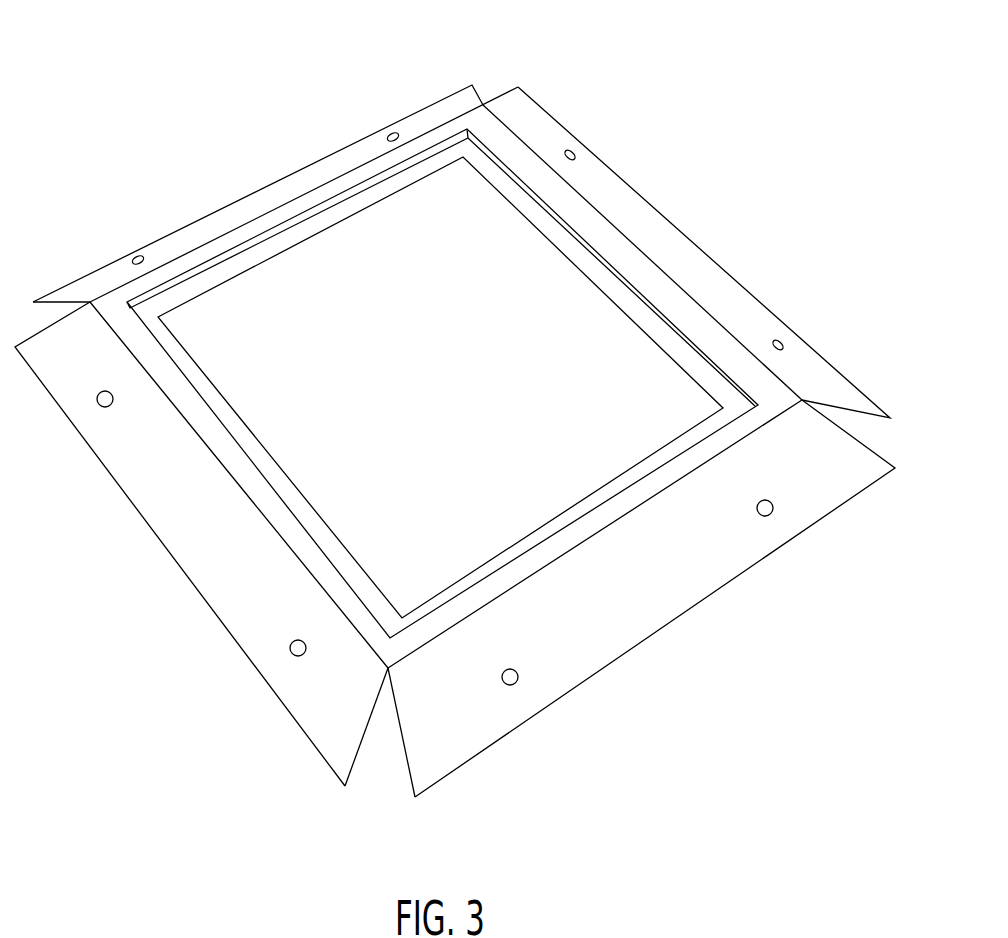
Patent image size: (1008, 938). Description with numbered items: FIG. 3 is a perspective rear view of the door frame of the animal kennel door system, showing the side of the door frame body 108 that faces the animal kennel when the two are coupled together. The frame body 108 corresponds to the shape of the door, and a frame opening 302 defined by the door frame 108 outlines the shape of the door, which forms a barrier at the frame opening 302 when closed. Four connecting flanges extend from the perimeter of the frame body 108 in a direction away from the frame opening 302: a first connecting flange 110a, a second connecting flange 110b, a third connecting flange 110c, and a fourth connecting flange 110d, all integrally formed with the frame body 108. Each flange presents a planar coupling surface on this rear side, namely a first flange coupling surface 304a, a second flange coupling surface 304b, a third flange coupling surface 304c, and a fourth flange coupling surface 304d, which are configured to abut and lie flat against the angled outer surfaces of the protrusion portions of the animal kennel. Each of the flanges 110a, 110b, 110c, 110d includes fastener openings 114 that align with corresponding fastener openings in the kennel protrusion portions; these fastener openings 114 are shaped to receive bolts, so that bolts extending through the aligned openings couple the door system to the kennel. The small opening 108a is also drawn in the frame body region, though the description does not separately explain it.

The door frame body 108 is at (634, 118).
The mounting hole 108a is at (514, 683).
The first connecting flange 110a is at (185, 242).
The second connecting flange 110b is at (467, 735).
The third connecting flange 110c is at (705, 288).
The fourth connecting flange 110d is at (325, 708).
The fastener openings 114 is at (772, 513).
The frame opening 302 is at (592, 276).
The first flange coupling surface 304a is at (317, 173).
The second flange coupling surface 304b is at (677, 597).
The third flange coupling surface 304c is at (765, 332).
The fourth flange coupling surface 304d is at (155, 508).